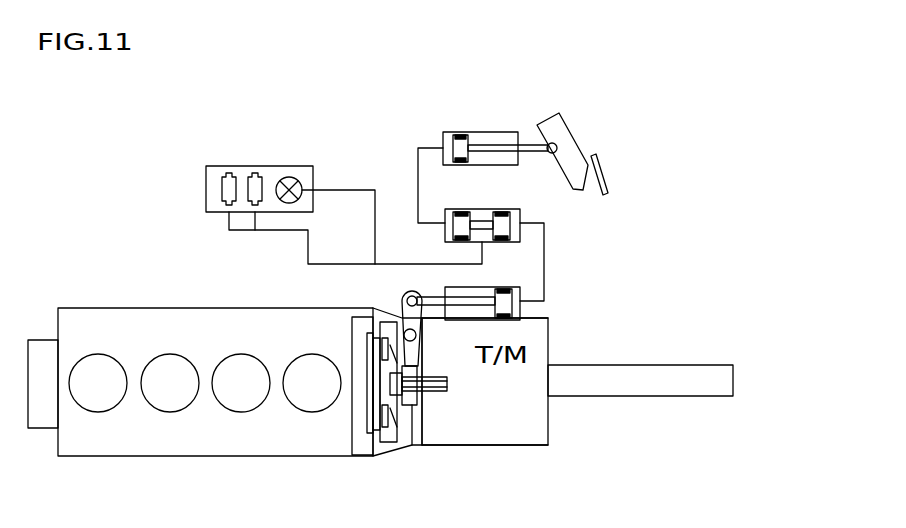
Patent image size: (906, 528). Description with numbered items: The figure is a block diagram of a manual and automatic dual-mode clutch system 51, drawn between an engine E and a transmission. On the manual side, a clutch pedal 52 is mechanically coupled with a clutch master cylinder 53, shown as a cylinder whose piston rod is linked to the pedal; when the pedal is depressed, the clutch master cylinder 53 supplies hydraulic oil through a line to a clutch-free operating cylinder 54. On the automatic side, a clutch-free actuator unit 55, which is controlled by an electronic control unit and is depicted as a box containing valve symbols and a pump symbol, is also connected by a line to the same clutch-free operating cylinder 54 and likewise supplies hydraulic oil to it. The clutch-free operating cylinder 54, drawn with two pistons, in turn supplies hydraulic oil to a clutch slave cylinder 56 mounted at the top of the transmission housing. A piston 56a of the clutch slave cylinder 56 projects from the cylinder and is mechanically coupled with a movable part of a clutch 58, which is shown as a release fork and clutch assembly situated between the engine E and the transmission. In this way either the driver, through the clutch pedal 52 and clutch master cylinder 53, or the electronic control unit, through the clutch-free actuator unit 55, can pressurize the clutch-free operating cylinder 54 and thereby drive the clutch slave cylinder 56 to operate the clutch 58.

The manual and automatic dual-mode clutch system 51 is at (191, 131).
The clutch pedal 52 is at (603, 172).
The clutch master cylinder 53 is at (442, 131).
The clutch-free operating cylinder 54 is at (520, 212).
The clutch-free actuator unit 55 is at (205, 192).
The clutch slave cylinder 56 is at (520, 312).
The piston 56a is at (507, 281).
The clutch 58 is at (398, 314).
The engine E is at (193, 458).